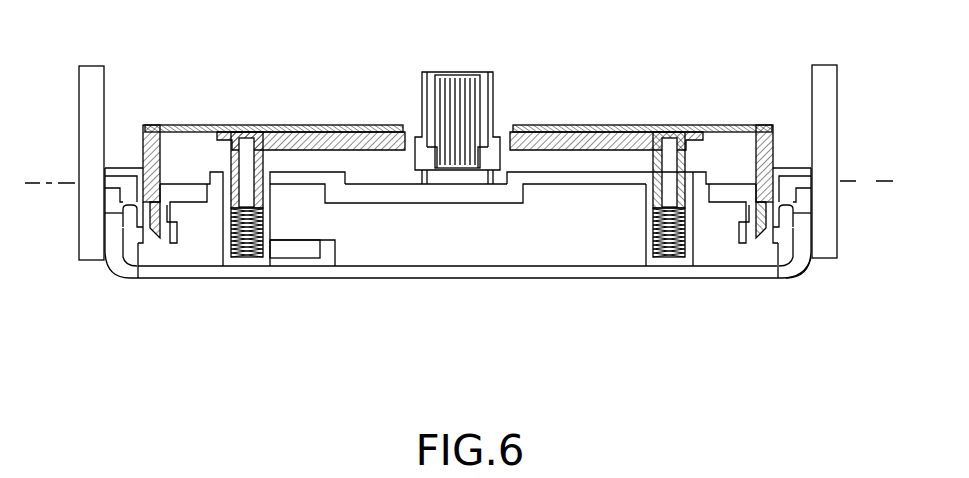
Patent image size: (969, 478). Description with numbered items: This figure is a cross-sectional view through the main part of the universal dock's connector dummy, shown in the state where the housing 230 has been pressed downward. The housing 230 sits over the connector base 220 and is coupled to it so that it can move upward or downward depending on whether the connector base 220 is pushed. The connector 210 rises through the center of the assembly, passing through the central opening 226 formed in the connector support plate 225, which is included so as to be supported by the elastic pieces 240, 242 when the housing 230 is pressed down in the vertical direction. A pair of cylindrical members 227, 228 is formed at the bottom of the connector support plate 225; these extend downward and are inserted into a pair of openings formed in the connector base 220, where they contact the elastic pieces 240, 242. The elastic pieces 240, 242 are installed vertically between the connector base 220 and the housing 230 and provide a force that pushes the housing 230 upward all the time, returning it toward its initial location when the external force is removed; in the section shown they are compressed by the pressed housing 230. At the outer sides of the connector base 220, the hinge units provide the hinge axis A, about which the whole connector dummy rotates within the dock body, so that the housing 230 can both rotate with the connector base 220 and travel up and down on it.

The connector 210 is at (481, 96).
The connector base 220 is at (545, 243).
The connector support plate 225 is at (313, 140).
The opening 226 is at (498, 143).
The cylindrical member 227 is at (218, 160).
The cylindrical member 228 is at (688, 157).
The housing 230 is at (622, 125).
The elastic piece 240 is at (236, 258).
The elastic piece 242 is at (660, 255).
The hinge axis A is at (863, 181).